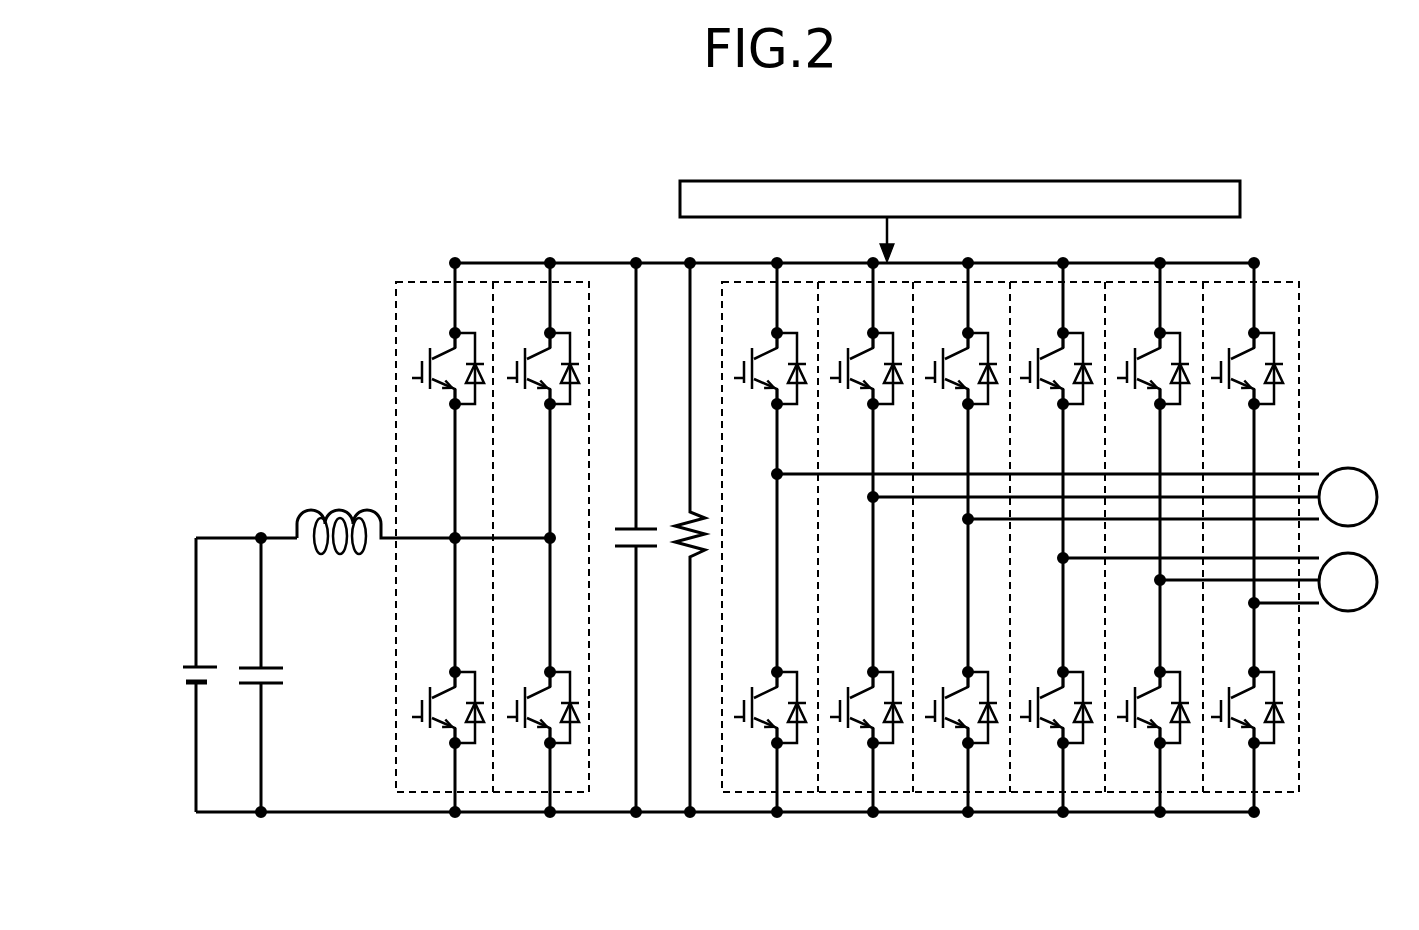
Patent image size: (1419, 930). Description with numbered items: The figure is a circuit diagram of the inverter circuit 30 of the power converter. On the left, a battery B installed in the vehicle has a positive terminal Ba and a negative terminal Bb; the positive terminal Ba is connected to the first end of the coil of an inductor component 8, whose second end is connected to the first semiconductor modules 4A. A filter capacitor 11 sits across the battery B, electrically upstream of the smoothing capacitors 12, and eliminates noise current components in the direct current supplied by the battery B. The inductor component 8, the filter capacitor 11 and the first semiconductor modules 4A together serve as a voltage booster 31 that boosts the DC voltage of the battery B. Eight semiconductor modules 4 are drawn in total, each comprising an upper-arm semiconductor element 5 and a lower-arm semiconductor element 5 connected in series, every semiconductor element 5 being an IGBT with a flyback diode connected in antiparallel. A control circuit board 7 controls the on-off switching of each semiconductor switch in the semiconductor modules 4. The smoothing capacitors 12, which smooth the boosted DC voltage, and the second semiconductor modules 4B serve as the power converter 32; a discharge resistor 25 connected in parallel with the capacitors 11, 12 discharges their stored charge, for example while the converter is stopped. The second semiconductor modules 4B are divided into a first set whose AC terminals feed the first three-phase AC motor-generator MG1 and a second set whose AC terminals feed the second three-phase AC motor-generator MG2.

The inverter circuit 30 is at (1295, 205).
The battery B is at (192, 675).
The positive terminal Ba is at (183, 668).
The negative terminal Bb is at (190, 684).
The filter capacitor 11 is at (255, 664).
The inductor component 8 is at (333, 500).
The voltage booster 31 is at (575, 842).
The power converter 32 is at (1313, 842).
The smoothing capacitor 12 is at (627, 550).
The discharge resistor 25 is at (683, 510).
The semiconductor module 4 is at (847, 463).
The first semiconductor module 4A is at (520, 292).
The second semiconductor module 4B is at (945, 295).
The semiconductor element 5 is at (425, 335).
The control circuit board 7 is at (980, 192).
The first three-phase AC motor-generator MG1 is at (1348, 476).
The second three-phase AC motor-generator MG2 is at (1350, 600).